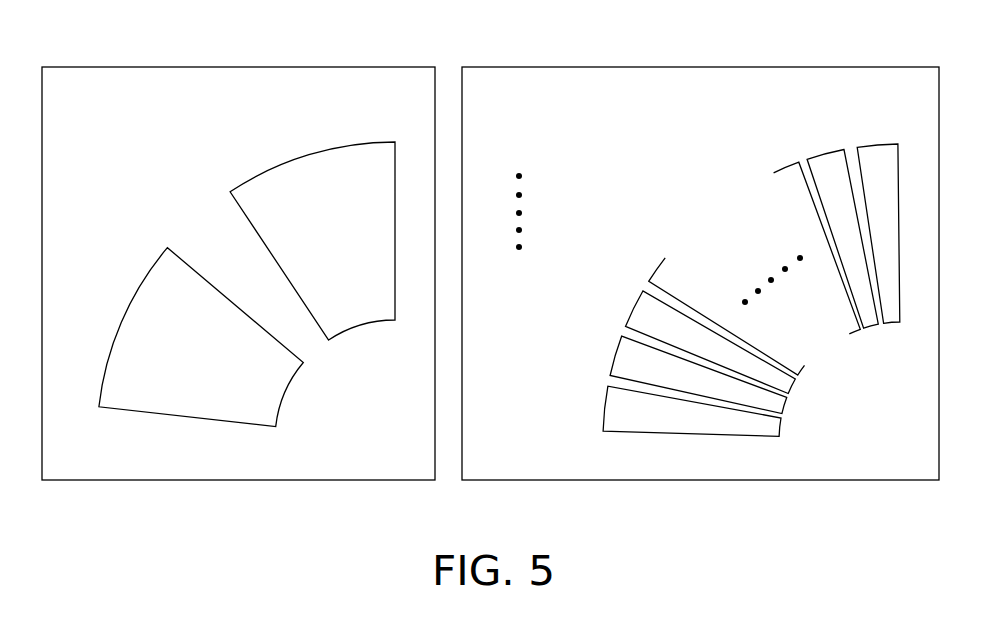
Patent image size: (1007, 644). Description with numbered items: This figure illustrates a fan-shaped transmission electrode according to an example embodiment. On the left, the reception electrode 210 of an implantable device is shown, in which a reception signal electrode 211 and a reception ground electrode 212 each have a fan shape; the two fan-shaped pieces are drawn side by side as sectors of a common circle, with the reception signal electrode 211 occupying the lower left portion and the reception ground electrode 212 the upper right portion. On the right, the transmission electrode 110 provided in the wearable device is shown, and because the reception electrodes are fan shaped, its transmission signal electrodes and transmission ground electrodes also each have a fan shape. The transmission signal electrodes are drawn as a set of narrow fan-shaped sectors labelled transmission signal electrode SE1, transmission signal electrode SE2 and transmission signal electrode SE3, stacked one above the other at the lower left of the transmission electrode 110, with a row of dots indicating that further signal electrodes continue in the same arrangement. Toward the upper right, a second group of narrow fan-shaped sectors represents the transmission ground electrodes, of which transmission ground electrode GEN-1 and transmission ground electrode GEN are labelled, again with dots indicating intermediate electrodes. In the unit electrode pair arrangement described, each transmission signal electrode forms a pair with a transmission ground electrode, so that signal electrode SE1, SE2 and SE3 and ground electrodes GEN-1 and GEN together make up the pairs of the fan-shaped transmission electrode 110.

The reception electrode 210 is at (168, 67).
The reception signal electrode 211 is at (201, 337).
The reception ground electrode 212 is at (312, 241).
The transmission electrode 110 is at (793, 67).
The transmission ground electrode GEN is at (878, 146).
The transmission ground electrode GEN-1 is at (827, 152).
The transmission signal electrode SE1 is at (605, 402).
The transmission signal electrode SE2 is at (618, 357).
The transmission signal electrode SE3 is at (633, 307).